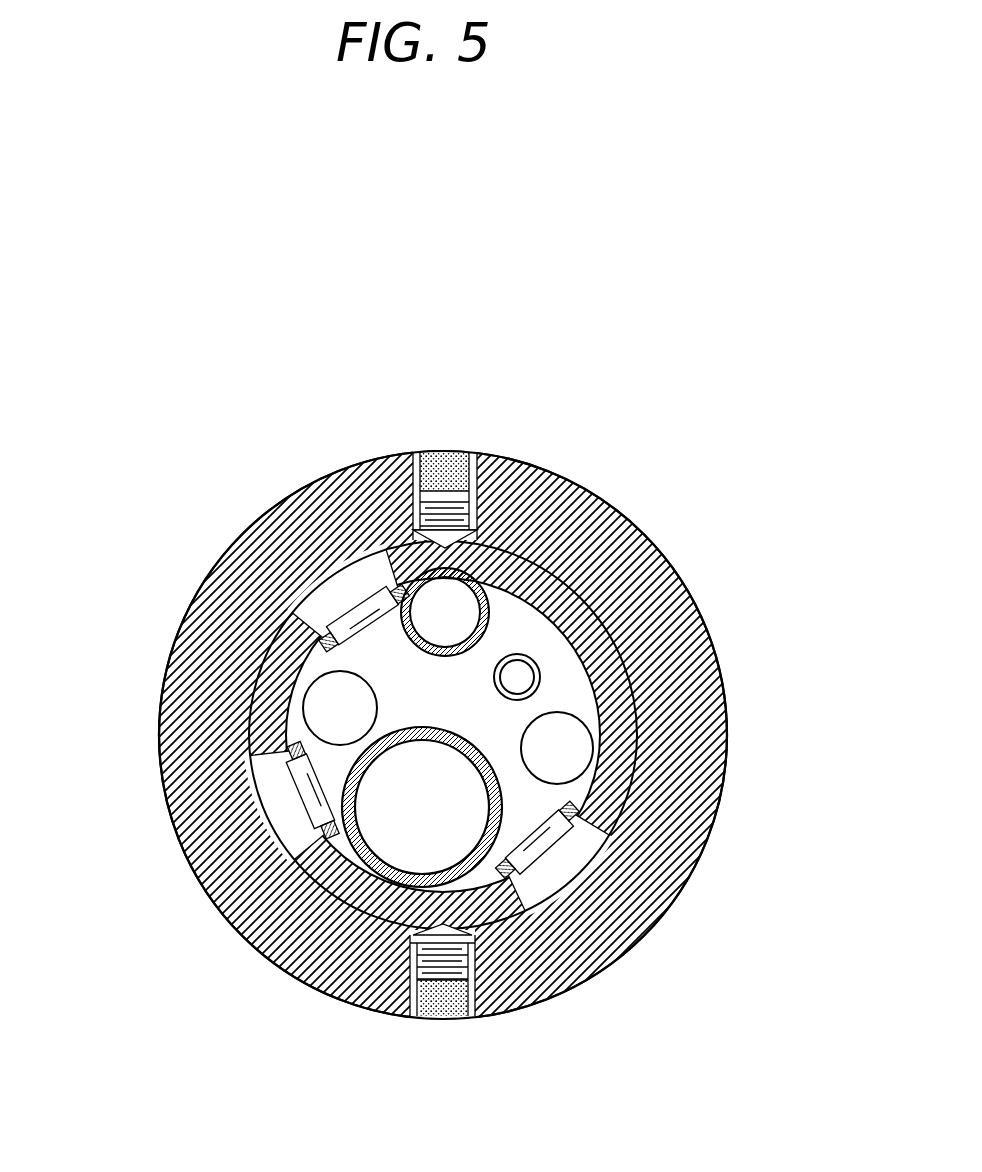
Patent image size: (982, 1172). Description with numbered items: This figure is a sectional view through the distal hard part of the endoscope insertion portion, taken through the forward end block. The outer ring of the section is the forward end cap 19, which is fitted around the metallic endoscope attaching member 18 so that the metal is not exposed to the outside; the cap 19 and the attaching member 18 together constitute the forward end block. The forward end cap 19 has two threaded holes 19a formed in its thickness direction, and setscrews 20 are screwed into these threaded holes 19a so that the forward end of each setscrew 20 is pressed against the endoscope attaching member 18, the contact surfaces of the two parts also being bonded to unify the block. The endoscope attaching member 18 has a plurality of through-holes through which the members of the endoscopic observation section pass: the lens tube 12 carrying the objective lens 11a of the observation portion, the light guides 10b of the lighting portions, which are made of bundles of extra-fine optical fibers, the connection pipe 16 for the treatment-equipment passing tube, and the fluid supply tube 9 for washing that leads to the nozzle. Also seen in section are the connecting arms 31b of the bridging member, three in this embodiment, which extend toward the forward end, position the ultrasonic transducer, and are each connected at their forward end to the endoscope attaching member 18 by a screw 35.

The fluid supply tube 9 is at (540, 675).
The light guide 10b is at (340, 708).
The objective lens 11a is at (588, 605).
The lens tube 12 is at (532, 557).
The connection pipe 16 is at (347, 838).
The endoscope attaching member 18 is at (573, 985).
The forward end cap 19 is at (615, 560).
The threaded hole 19a is at (463, 453).
The setscrew 20 is at (430, 453).
The connecting arm 31b is at (330, 640).
The screw 35 is at (283, 563).